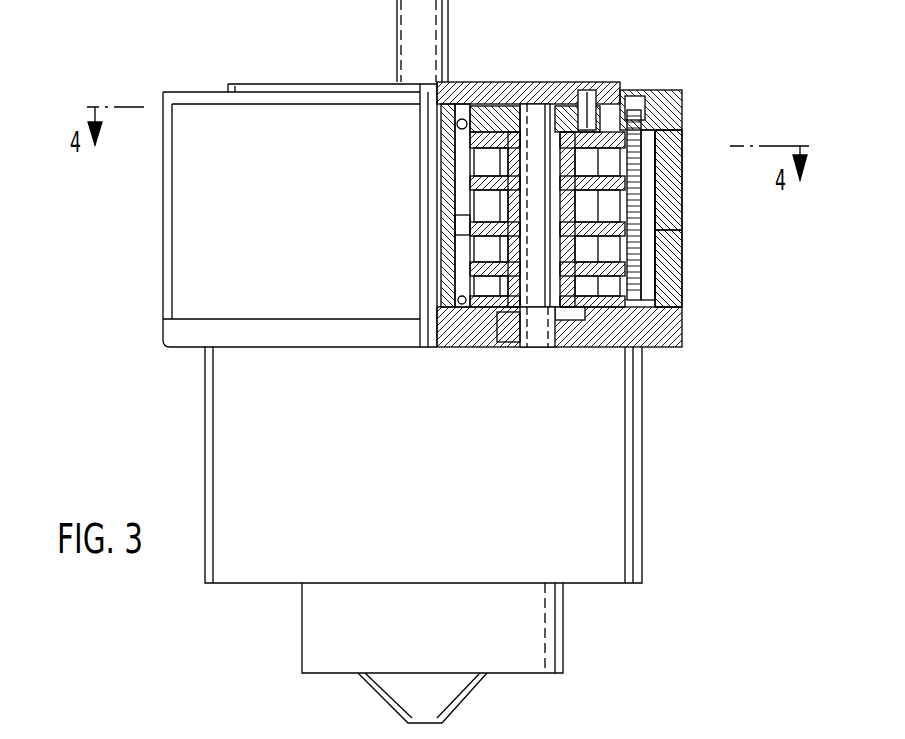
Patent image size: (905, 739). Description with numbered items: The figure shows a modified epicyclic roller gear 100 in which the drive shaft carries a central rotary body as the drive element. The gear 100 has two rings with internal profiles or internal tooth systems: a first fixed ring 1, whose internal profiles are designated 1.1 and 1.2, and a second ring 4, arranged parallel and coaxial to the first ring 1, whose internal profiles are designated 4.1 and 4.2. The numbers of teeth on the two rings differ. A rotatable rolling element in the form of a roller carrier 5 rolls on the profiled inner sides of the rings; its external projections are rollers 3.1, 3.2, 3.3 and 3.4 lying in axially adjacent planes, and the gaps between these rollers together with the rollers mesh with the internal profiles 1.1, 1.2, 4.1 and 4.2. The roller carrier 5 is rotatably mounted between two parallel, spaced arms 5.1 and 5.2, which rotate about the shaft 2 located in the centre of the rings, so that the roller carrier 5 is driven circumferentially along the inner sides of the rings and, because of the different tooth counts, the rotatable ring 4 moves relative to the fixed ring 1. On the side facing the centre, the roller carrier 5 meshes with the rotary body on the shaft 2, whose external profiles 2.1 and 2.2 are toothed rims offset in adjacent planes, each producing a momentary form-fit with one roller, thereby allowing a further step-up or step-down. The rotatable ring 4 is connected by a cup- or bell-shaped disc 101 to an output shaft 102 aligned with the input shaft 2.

The first fixed ring 1 is at (650, 258).
The internal profile of the first ring 1.1 is at (652, 295).
The internal profile of the first ring 1.2 is at (650, 238).
The shaft 2 is at (420, 333).
The external profile 2.1 is at (470, 226).
The external profile 2.2 is at (463, 150).
The roller 3.1 is at (470, 282).
The roller 3.2 is at (490, 240).
The roller 3.3 is at (473, 197).
The roller 3.4 is at (463, 157).
The second ring 4 is at (648, 177).
The internal profile of the second ring 4.1 is at (647, 160).
The internal profile of the second ring 4.2 is at (672, 107).
The roller carrier 5 is at (650, 205).
The arm 5.1 is at (522, 95).
The arm 5.2 is at (508, 320).
The epicyclic roller gear 100 is at (673, 393).
The disc 101 is at (330, 84).
The output shaft 102 is at (432, 44).